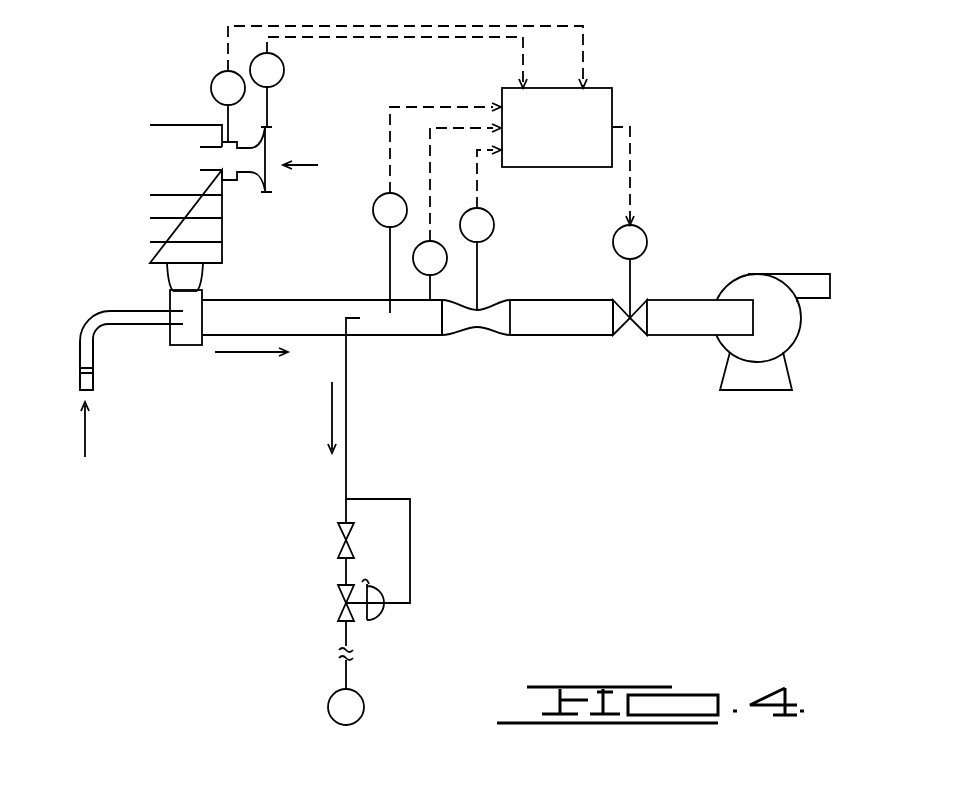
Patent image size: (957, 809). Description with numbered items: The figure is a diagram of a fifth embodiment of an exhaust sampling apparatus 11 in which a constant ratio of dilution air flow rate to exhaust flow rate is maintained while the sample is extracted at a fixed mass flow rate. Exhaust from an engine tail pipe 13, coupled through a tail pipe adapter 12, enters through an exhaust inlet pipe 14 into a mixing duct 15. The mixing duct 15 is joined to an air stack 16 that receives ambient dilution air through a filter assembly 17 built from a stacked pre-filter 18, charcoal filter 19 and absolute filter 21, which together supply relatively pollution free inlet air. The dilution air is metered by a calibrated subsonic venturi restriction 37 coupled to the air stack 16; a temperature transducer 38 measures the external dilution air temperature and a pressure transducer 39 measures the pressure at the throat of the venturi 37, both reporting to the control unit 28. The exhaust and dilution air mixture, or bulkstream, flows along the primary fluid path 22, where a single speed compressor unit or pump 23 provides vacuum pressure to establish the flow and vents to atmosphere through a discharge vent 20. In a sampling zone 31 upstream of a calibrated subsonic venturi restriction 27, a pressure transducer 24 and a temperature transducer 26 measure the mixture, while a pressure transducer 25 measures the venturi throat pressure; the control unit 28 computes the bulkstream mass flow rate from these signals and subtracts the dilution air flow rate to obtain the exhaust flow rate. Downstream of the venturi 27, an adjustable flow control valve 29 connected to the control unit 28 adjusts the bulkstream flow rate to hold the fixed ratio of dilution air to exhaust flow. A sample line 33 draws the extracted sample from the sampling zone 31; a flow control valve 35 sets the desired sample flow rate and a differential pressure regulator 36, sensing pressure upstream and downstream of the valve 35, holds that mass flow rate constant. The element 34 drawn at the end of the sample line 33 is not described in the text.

The apparatus 11 is at (770, 118).
The tail pipe adapter 12 is at (77, 371).
The exhaust tail pipe 13 is at (78, 383).
The exhaust inlet pipe 14 is at (80, 332).
The mixing duct 15 is at (185, 344).
The air stack 16 is at (205, 276).
The filter assembly 17 is at (232, 232).
The pre-filter 18 is at (148, 207).
The charcoal filter 19 is at (150, 233).
The discharge vent 20 is at (830, 273).
The absolute filter 21 is at (148, 254).
The primary fluid path 22 is at (307, 299).
The compressor unit or pump 23 is at (770, 385).
The pressure transducer 24 is at (436, 264).
The pressure transducer 25 is at (490, 215).
The temperature transducer 26 is at (383, 217).
The subsonic venturi restriction 27 is at (477, 337).
The control unit 28 is at (606, 95).
The flow control valve 29 is at (630, 338).
The sampling zone 31 is at (418, 337).
The sample line 33 is at (348, 462).
The sample pump 34 is at (328, 706).
The flow control valve 35 is at (356, 540).
The differential pressure regulator 36 is at (378, 615).
The subsonic venturi restriction 37 is at (280, 133).
The temperature transducer 38 is at (275, 68).
The pressure transducer 39 is at (221, 83).